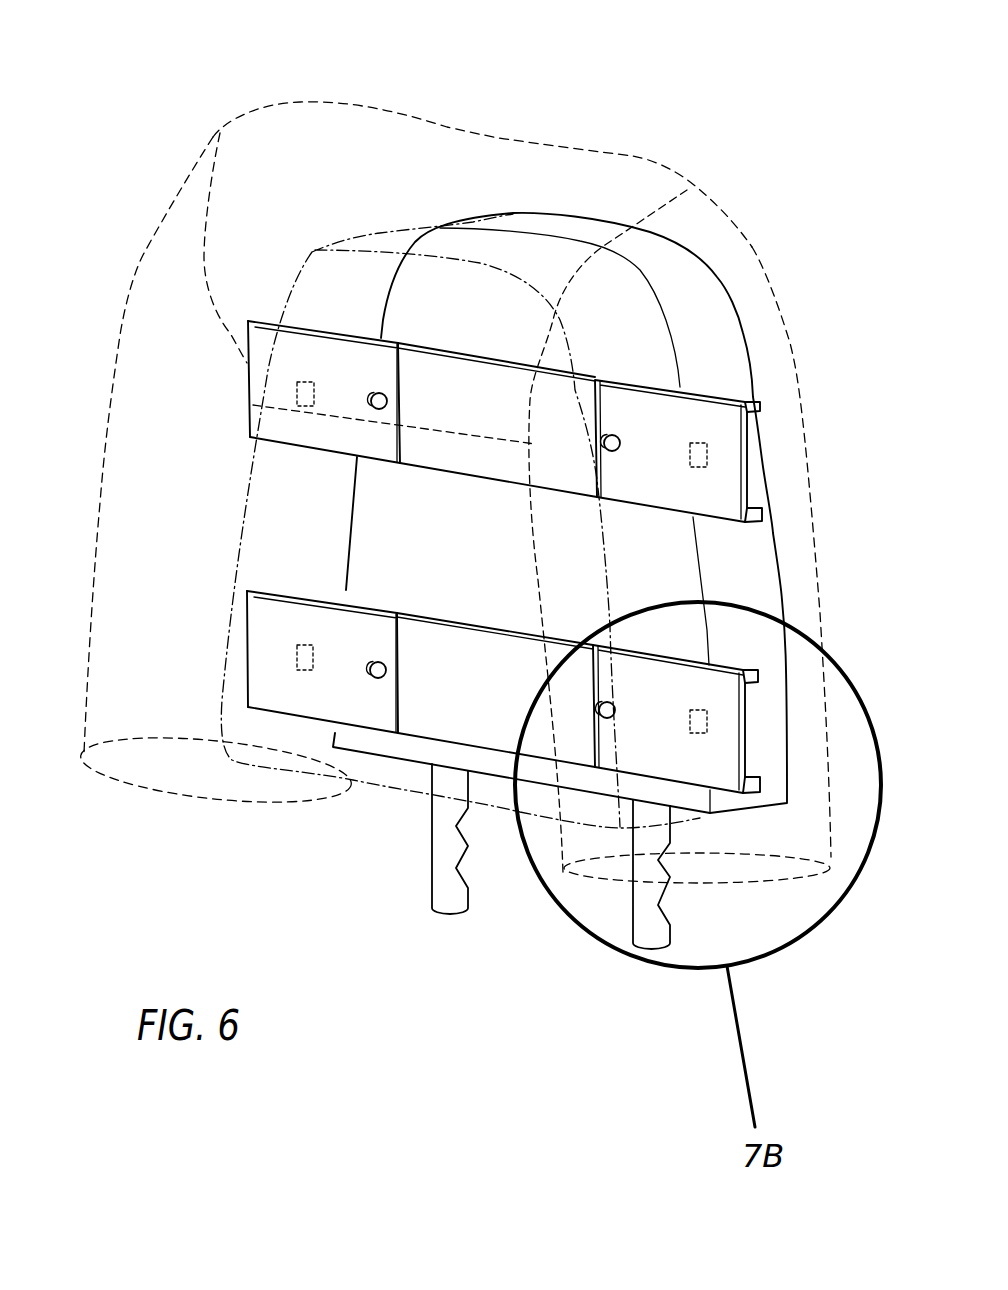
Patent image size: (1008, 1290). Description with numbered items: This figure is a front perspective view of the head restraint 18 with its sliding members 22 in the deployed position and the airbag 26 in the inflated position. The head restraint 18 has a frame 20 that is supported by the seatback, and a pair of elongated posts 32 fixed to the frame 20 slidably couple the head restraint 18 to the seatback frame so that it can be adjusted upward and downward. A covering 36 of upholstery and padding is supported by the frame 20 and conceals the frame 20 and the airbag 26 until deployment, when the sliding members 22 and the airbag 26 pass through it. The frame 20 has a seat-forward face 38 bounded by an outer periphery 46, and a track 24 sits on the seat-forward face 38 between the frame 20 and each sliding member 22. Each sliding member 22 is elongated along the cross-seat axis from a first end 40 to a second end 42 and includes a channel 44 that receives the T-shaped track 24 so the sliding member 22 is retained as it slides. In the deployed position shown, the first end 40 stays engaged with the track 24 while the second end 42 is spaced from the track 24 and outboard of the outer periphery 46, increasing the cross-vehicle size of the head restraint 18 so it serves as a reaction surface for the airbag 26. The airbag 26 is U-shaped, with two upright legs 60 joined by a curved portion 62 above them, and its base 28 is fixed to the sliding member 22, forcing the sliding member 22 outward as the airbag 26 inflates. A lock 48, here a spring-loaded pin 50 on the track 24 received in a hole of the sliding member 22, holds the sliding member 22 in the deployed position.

The head restraint 18 is at (733, 149).
The frame 20 is at (566, 214).
The sliding member 22 is at (247, 367).
The track 24 is at (473, 447).
The airbag 26 is at (210, 135).
The base 28 is at (296, 392).
The posts 32 is at (430, 900).
The covering 36 is at (310, 256).
The seat-forward face 38 is at (524, 250).
The first end 40 is at (400, 381).
The second end 42 is at (247, 383).
The channel 44 is at (747, 486).
The outer periphery 46 is at (627, 266).
The lock 48 is at (372, 384).
The spring-loaded pin 50 is at (372, 404).
The legs 60 is at (103, 445).
The curved portion 62 is at (430, 117).